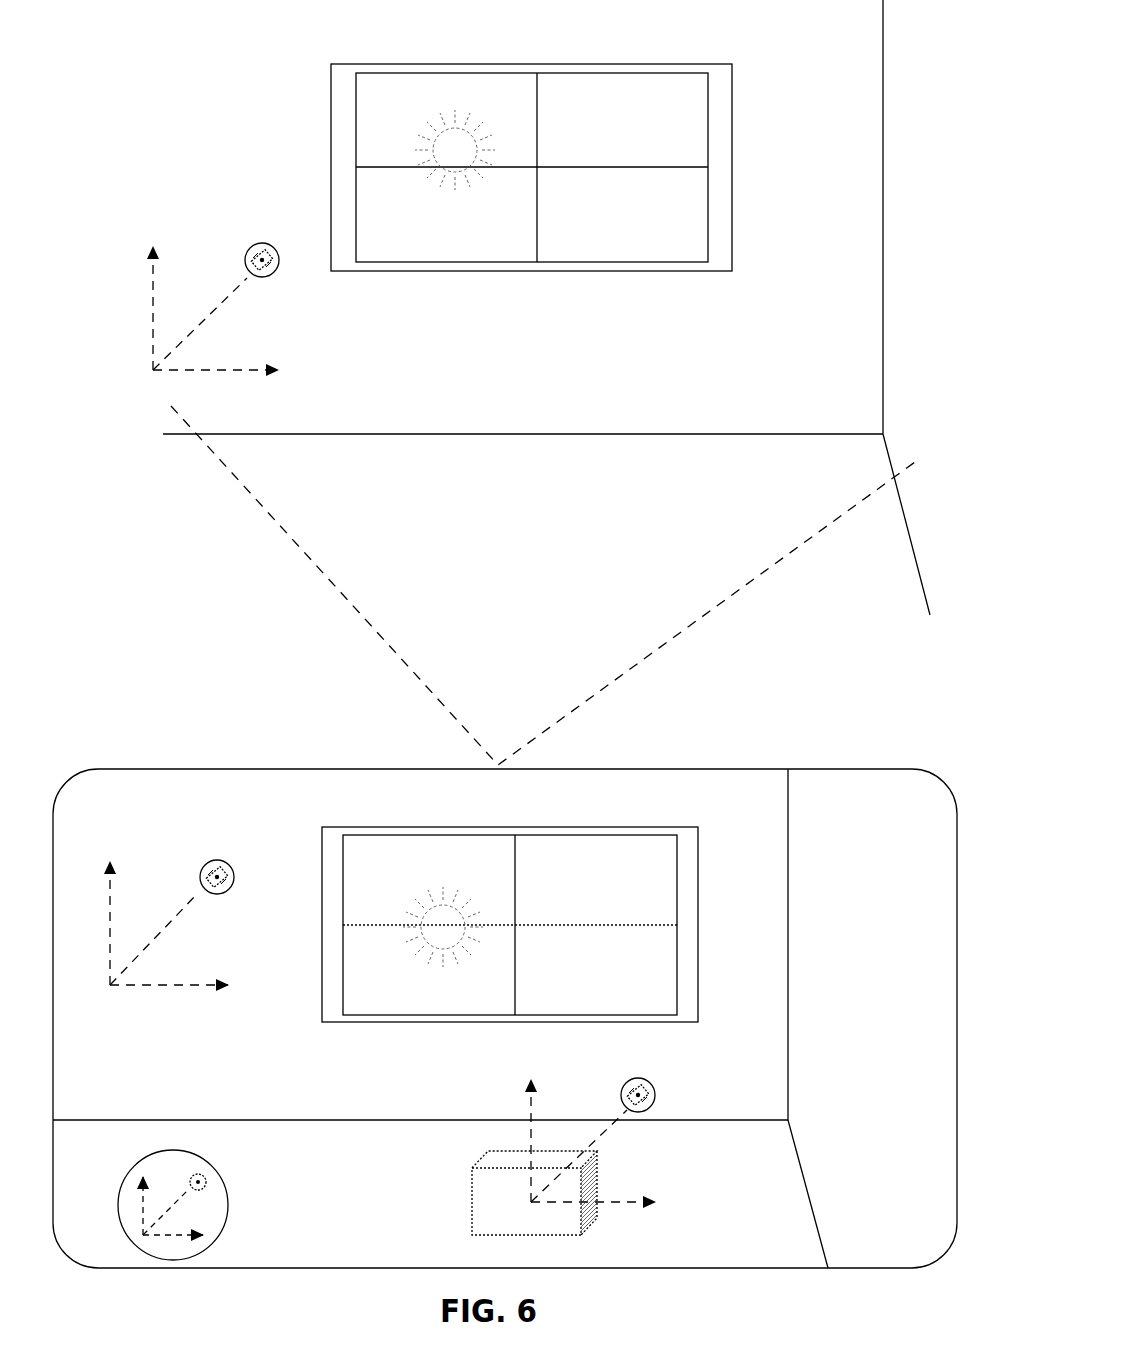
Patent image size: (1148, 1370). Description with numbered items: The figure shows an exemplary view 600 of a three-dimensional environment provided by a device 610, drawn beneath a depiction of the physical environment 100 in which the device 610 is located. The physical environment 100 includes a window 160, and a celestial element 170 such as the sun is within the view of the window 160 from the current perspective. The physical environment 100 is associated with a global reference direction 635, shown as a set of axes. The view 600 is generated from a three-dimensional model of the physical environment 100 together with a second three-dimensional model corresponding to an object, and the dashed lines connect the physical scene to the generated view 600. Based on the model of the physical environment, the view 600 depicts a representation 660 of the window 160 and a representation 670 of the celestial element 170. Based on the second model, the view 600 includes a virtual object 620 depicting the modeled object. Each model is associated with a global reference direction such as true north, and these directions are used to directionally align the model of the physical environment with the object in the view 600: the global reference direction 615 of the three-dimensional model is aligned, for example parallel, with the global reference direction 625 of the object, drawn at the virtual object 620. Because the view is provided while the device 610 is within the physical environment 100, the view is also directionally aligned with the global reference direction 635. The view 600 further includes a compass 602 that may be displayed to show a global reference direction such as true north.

The physical environment 100 is at (170, 157).
The window 160 is at (733, 135).
The celestial element 170 is at (443, 118).
The global reference direction of the physical environment 635 is at (225, 282).
The view 600 is at (92, 805).
The device 610 is at (205, 768).
The global reference direction of the 3D model 615 is at (185, 895).
The virtual object 620 is at (597, 1185).
The global reference direction of the object 625 is at (605, 1112).
The representation of window 660 is at (698, 893).
The representation of celestial element 670 is at (420, 885).
The compass 602 is at (118, 1185).